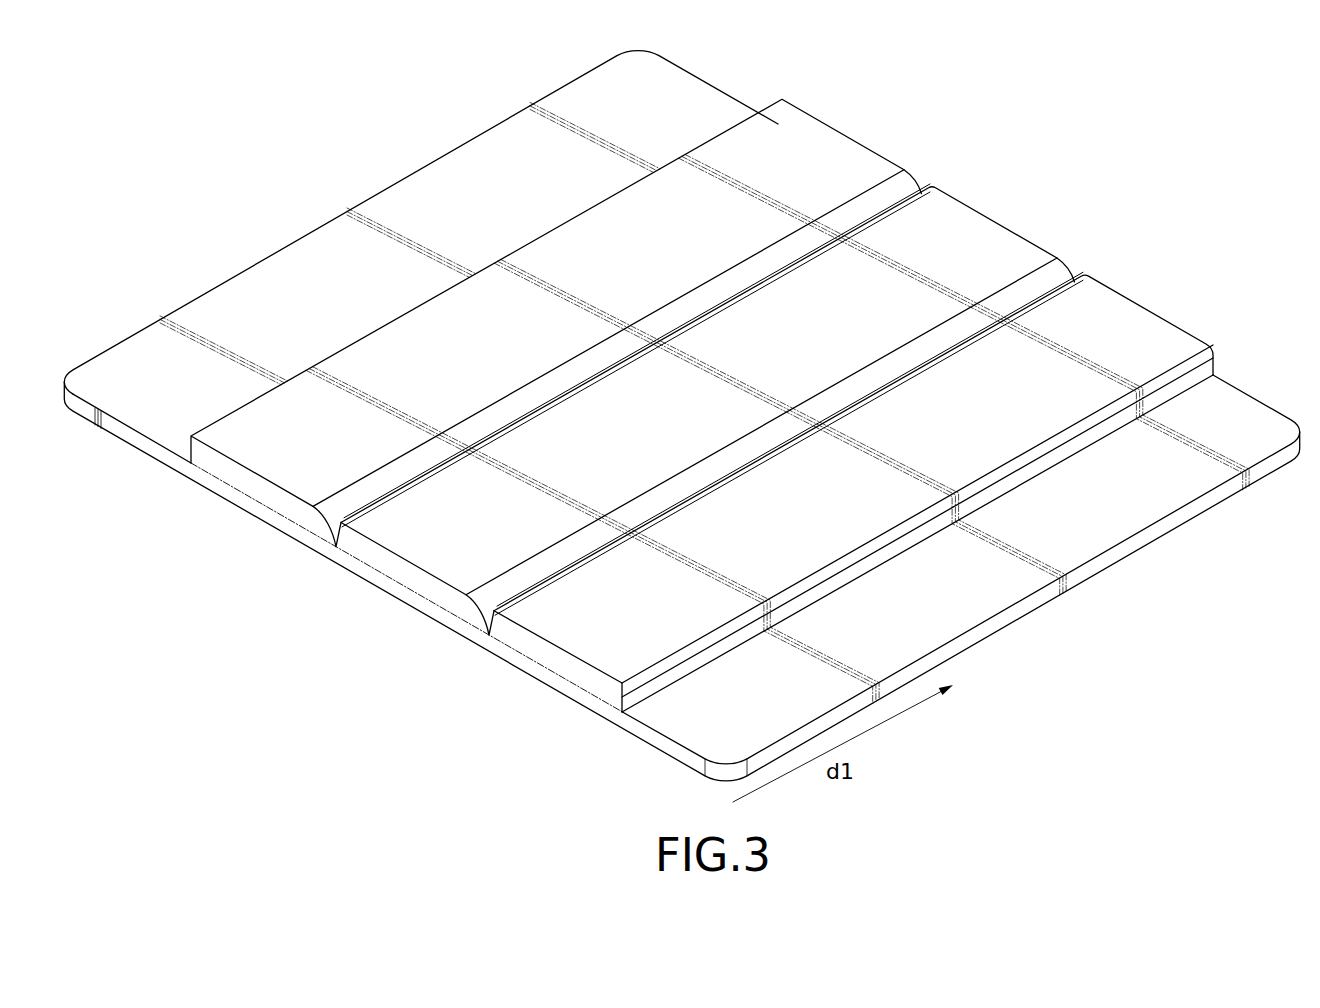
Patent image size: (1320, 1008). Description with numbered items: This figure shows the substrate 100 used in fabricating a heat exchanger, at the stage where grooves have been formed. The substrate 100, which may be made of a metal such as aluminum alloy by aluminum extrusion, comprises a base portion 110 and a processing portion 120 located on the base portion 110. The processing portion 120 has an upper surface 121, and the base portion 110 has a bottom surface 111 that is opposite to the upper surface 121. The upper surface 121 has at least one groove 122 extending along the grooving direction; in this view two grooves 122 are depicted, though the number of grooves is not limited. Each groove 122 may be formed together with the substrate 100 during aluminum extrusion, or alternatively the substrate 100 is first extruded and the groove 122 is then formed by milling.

The substrate 100 is at (681, 416).
The base portion 110 is at (681, 416).
The bottom surface 111 is at (325, 549).
The processing portion 120 is at (744, 405).
The upper surface 121 is at (1112, 307).
The groove 122 is at (704, 292).